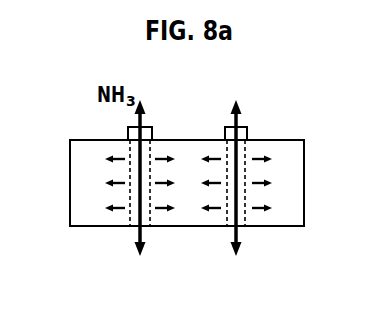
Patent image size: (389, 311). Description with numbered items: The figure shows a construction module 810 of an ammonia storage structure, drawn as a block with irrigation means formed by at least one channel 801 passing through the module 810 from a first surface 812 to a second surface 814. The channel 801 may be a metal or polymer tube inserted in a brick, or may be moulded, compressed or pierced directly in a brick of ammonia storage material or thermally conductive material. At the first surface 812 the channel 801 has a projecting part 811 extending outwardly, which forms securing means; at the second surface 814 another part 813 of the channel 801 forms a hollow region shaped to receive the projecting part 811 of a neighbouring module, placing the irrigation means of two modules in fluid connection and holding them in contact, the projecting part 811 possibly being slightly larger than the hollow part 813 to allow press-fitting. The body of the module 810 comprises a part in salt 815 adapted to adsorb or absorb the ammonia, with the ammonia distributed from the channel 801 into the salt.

The channel 801 is at (132, 190).
The module 810 is at (298, 110).
The part of channel 811 is at (243, 131).
The first surface 812 is at (188, 128).
The part of channel 813 is at (242, 212).
The second surface 814 is at (188, 236).
The part in salt 815 is at (290, 184).